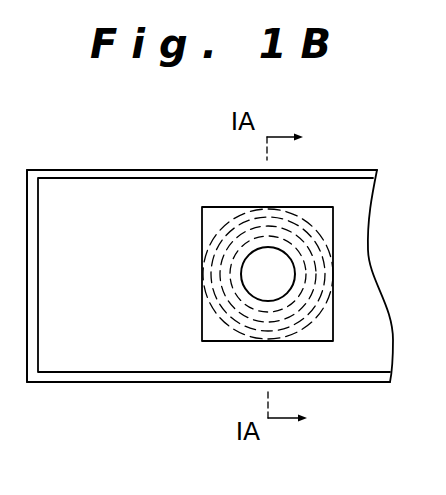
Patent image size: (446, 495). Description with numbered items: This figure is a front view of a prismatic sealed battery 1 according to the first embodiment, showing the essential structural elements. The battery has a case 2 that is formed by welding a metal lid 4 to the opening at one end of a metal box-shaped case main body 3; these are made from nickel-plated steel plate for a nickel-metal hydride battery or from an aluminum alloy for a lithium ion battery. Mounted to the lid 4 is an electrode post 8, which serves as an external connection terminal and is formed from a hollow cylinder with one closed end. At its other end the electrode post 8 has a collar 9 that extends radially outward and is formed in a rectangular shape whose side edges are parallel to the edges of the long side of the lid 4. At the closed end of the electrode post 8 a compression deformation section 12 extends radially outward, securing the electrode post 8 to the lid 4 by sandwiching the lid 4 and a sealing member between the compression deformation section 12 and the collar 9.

The prismatic sealed battery 1 is at (97, 141).
The case 2 is at (140, 159).
The case main body 3 is at (78, 173).
The lid 4 is at (106, 292).
The electrode post 8 is at (226, 196).
The collar 9 is at (226, 332).
The compression deformation section 12 is at (308, 320).